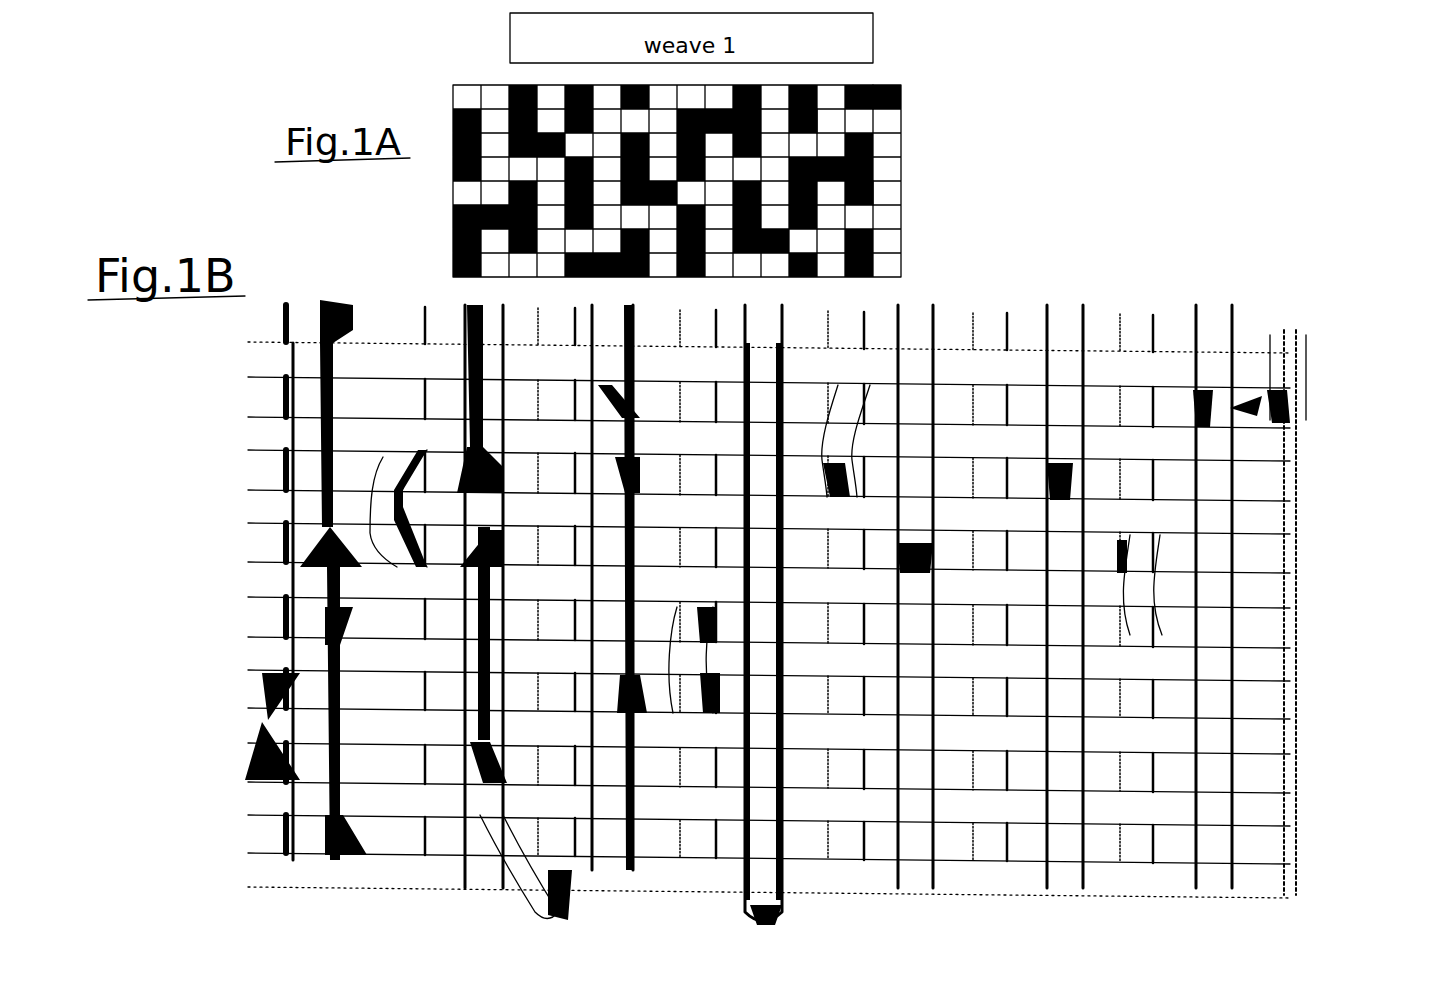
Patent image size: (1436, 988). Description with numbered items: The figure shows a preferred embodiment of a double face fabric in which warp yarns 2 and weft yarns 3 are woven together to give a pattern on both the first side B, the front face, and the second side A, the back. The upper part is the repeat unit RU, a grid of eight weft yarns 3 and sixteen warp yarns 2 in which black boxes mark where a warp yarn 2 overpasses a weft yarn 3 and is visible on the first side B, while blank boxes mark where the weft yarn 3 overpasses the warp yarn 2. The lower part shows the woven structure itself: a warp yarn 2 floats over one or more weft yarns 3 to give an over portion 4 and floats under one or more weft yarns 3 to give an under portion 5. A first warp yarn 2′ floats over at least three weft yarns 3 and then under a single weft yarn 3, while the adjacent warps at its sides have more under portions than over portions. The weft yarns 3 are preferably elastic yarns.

In FIG. 1A, the repeat unit RU is at (438, 98).
In FIG. 1B, the warp yarn 2 is at (413, 322).
In FIG. 1A, the first warp yarn 2′ is at (866, 85).
In FIG. 1B, the first warp yarn 2′ is at (1217, 345).
In FIG. 1B, the weft yarn 3 is at (263, 502).
In FIG. 1B, the over portion 4 is at (272, 611).
In FIG. 1B, the under portion 5 is at (1303, 374).
In FIG. 1B, the second side A is at (1305, 840).
In FIG. 1B, the first side B is at (976, 296).